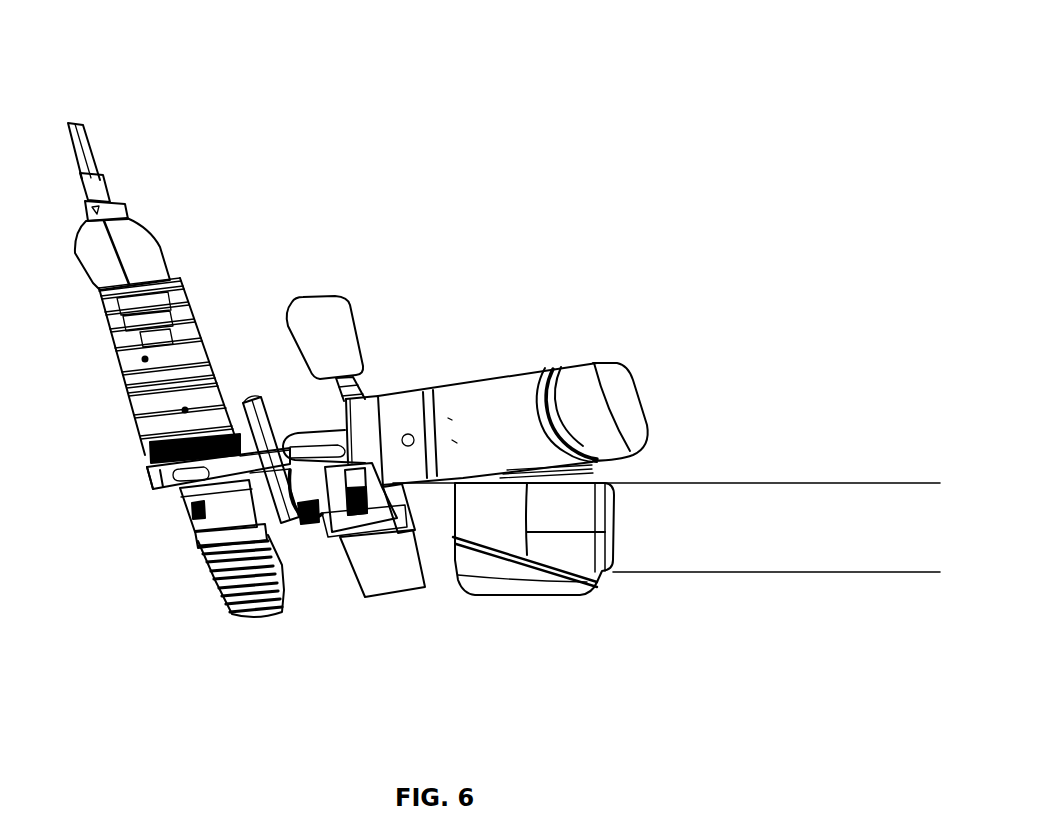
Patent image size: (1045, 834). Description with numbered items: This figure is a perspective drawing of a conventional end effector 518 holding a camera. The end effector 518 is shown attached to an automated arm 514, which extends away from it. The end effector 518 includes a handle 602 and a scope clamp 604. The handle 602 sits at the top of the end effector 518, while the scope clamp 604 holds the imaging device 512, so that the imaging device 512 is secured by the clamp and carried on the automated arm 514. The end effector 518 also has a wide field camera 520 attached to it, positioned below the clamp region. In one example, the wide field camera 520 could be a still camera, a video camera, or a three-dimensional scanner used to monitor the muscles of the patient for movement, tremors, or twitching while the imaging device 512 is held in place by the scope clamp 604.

The imaging device 512 is at (210, 597).
The automated arm 514 is at (765, 498).
The end effector 518 is at (284, 268).
The wide field camera 520 is at (352, 600).
The handle 602 is at (338, 335).
The scope clamp 604 is at (148, 489).